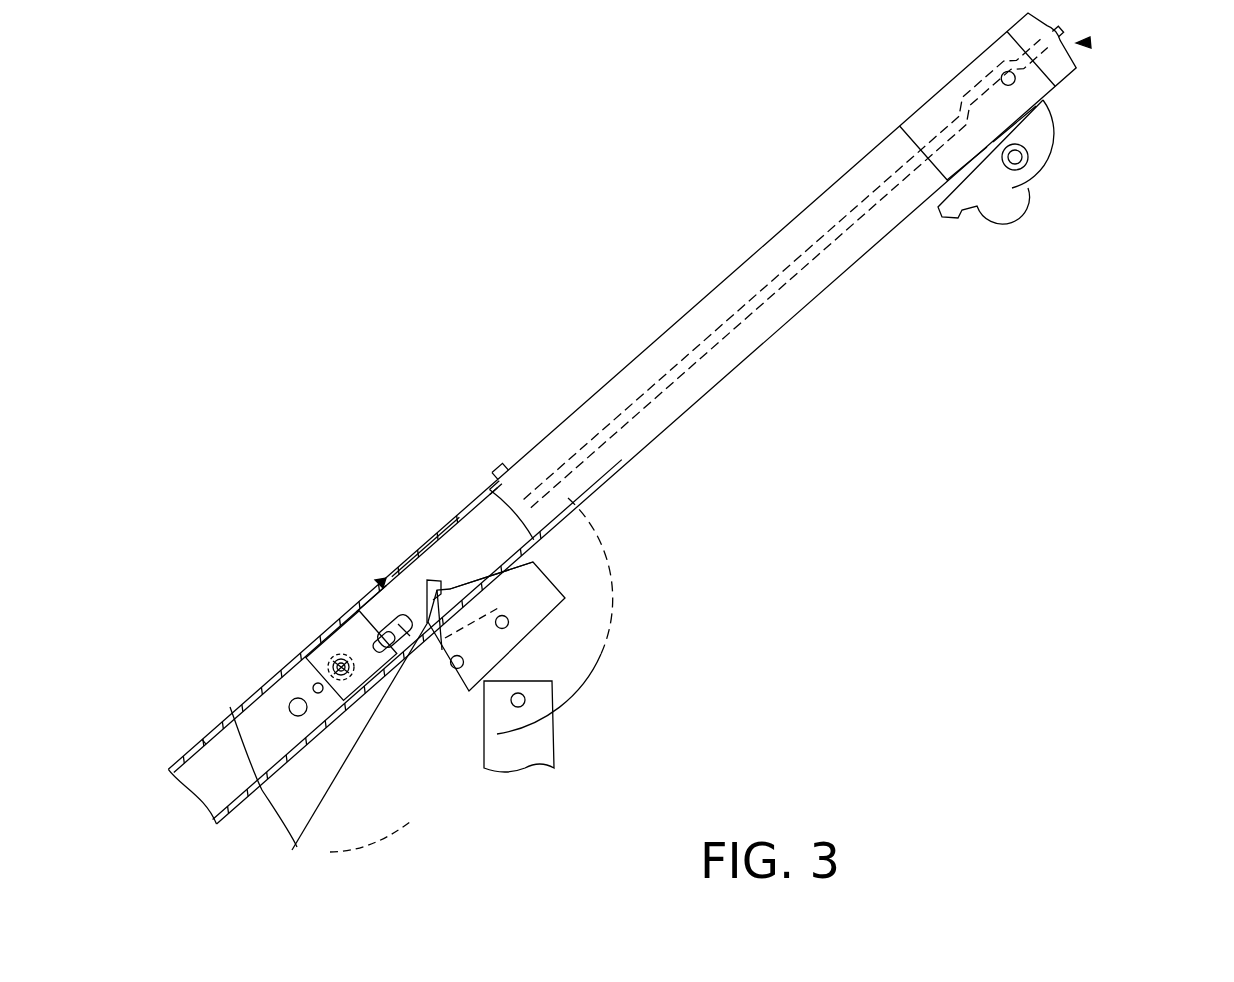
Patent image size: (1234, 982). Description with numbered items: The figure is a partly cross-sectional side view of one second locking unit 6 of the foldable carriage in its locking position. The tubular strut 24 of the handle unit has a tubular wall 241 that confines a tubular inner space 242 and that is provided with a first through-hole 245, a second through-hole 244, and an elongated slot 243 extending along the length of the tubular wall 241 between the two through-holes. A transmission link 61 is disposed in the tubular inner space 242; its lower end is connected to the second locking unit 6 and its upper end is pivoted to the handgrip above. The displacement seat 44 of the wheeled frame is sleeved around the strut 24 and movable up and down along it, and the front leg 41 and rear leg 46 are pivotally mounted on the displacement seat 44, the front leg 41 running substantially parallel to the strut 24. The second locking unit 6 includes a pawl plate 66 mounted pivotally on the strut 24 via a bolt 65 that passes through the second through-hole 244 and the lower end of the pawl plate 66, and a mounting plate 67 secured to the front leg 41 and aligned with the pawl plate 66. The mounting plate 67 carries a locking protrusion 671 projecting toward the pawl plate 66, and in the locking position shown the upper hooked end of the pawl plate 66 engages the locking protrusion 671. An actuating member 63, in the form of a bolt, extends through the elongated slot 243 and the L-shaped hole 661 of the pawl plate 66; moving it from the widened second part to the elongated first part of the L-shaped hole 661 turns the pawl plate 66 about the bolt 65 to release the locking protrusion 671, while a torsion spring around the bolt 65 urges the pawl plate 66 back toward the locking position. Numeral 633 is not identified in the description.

The strut 24 is at (673, 423).
The transmission link 61 is at (770, 297).
The second locking unit 6 is at (1082, 42).
The tubular wall 241 is at (433, 565).
The tubular inner space 242 is at (420, 553).
The first through-hole 245 is at (397, 557).
The elongated slot 243 is at (343, 590).
The actuating member 63 is at (377, 630).
The bolt 65 is at (340, 663).
The front leg 41 is at (362, 743).
The displacement seat 44 is at (393, 805).
The second through-hole 244 is at (333, 683).
The pawl plate 66 is at (368, 650).
The L-shaped hole 661 is at (403, 630).
The mounting plate 67 is at (428, 600).
The arc path 633 is at (455, 571).
The locking protrusion 671 is at (457, 590).
The rear leg 46 is at (557, 722).